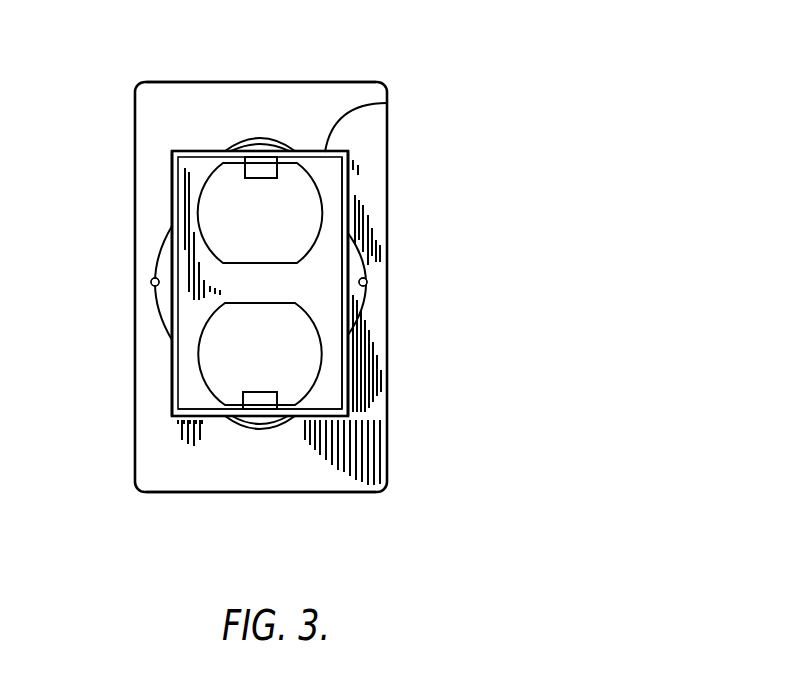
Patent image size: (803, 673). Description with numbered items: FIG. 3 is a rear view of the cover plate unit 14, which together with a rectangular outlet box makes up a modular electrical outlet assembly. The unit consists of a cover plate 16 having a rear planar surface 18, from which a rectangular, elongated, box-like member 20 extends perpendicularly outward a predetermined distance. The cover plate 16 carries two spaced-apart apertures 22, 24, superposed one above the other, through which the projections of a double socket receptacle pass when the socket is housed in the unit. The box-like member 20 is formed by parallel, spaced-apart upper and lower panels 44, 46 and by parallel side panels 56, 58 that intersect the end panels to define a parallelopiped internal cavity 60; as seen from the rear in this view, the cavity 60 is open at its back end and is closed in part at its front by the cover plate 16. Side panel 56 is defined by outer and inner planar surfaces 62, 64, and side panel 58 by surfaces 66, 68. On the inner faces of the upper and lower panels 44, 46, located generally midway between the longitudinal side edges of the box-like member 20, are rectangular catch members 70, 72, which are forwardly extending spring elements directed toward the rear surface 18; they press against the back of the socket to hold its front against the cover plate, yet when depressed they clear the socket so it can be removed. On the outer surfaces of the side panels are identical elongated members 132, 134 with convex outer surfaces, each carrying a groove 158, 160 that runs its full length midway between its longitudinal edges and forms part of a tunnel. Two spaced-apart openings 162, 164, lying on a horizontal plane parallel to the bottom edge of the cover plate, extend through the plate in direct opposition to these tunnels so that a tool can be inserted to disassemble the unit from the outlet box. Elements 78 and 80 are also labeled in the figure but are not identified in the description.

The cover plate unit 14 is at (100, 482).
The cover plate 16 is at (155, 108).
The rear planar surface 18 is at (155, 152).
The box-like member 20 is at (355, 183).
The aperture 22 is at (228, 195).
The aperture 24 is at (232, 365).
The upper member or panel 44 is at (314, 147).
The lower member or panel 46 is at (240, 430).
The side member or panel 56 is at (168, 383).
The side member or panel 58 is at (348, 353).
The internal cavity 60 is at (326, 385).
The outer planar surface 62 is at (172, 213).
The inner planar surface 64 is at (180, 380).
The outer planar surface 66 is at (388, 103).
The inner planar surface 68 is at (348, 217).
The catch member 70 is at (258, 172).
The catch member 72 is at (263, 400).
The frame inner edge 78 is at (170, 182).
The frame right inner edge 80 is at (343, 377).
The elongated member 132 is at (158, 311).
The elongated member 134 is at (362, 252).
The groove 158 is at (153, 286).
The groove 160 is at (367, 285).
The opening 162 is at (151, 281).
The opening 164 is at (367, 281).